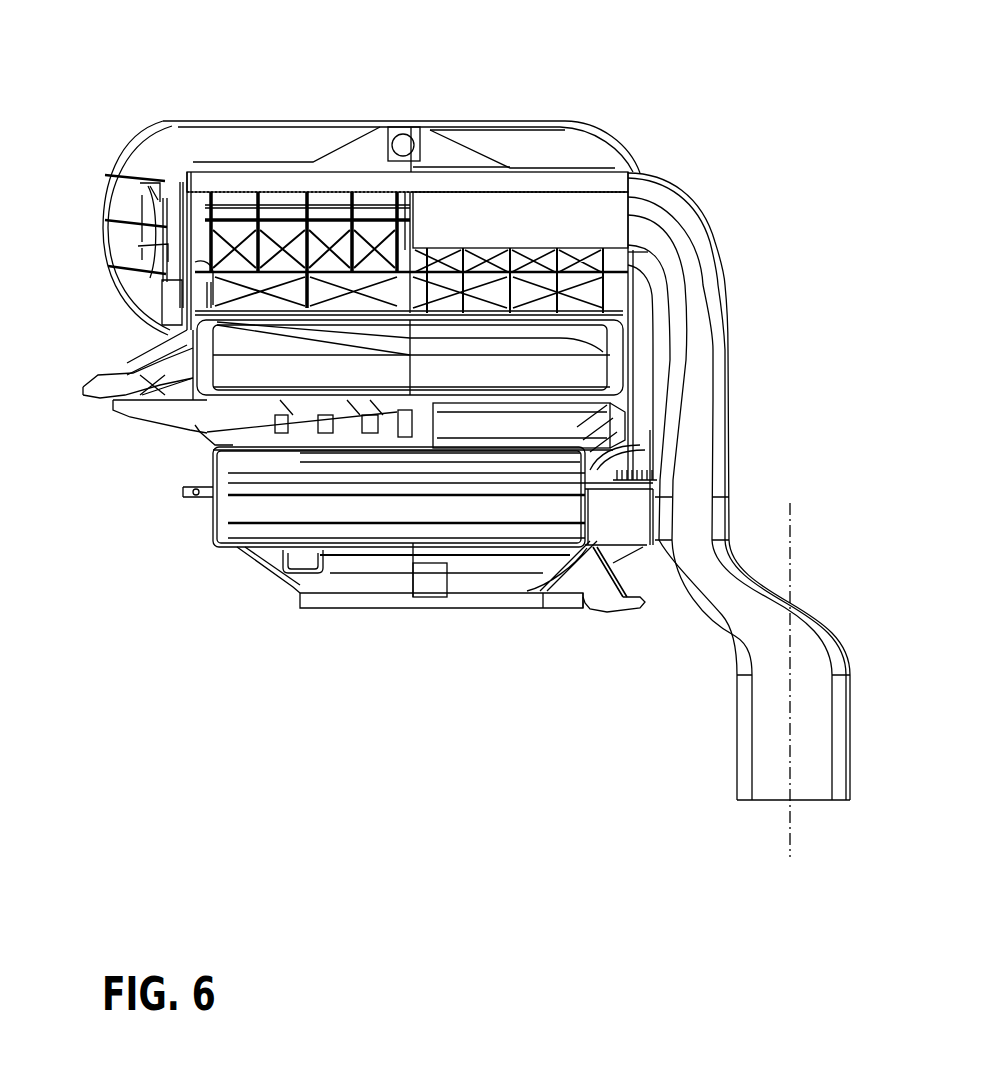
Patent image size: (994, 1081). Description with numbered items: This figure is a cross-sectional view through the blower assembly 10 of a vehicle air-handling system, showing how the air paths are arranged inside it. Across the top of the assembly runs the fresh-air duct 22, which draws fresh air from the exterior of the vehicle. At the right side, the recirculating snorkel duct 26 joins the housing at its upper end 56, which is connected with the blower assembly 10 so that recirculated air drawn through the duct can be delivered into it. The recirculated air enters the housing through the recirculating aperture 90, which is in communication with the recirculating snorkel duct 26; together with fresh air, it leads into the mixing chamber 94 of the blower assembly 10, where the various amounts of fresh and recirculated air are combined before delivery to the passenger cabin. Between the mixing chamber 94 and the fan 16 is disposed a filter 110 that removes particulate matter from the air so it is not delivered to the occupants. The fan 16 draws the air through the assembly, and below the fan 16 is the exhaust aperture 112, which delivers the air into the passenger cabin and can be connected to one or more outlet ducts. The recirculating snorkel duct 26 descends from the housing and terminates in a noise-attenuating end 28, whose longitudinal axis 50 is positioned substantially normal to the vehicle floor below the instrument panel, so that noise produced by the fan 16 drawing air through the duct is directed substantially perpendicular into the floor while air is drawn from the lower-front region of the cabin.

The blower assembly 10 is at (509, 84).
The fresh-air duct 22 is at (217, 122).
The upper end 56 is at (423, 193).
The recirculating aperture 90 is at (205, 272).
The mixing chamber 94 is at (263, 372).
The filter 110 is at (265, 487).
The fan 16 is at (353, 602).
The exhaust aperture 112 is at (443, 602).
The recirculating snorkel duct 26 is at (727, 640).
The noise-attenuating end 28 is at (767, 803).
The longitudinal axis 50 is at (793, 813).